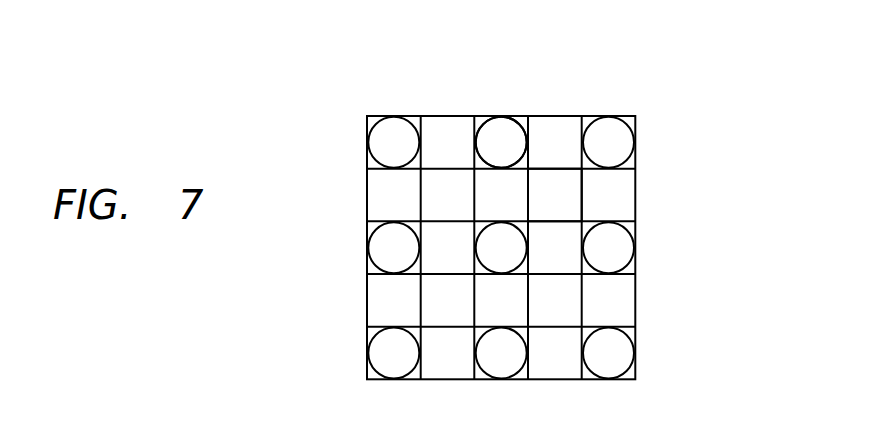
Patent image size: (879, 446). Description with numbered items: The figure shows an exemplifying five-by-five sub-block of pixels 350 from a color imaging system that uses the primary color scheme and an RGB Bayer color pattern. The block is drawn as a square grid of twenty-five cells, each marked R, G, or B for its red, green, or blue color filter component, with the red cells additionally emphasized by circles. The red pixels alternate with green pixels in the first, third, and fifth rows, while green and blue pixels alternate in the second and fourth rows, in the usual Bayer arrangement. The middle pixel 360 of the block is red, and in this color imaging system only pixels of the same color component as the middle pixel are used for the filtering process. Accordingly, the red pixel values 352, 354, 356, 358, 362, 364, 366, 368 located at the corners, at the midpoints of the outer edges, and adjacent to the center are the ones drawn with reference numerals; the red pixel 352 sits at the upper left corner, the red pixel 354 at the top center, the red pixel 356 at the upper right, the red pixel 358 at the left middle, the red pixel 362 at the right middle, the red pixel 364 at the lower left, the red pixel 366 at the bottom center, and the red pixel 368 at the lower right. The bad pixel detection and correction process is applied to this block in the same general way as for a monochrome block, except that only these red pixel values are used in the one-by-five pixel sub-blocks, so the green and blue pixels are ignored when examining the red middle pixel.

The color filter array pattern 350 is at (662, 58).
The red pixel 352 is at (376, 118).
The red pixel 354 is at (519, 118).
The red pixel 356 is at (630, 118).
The red pixel 358 is at (373, 228).
The middle pixel 360 is at (528, 222).
The red pixel 362 is at (634, 228).
The red pixel 364 is at (373, 379).
The red pixel 366 is at (517, 380).
The red pixel 368 is at (634, 333).